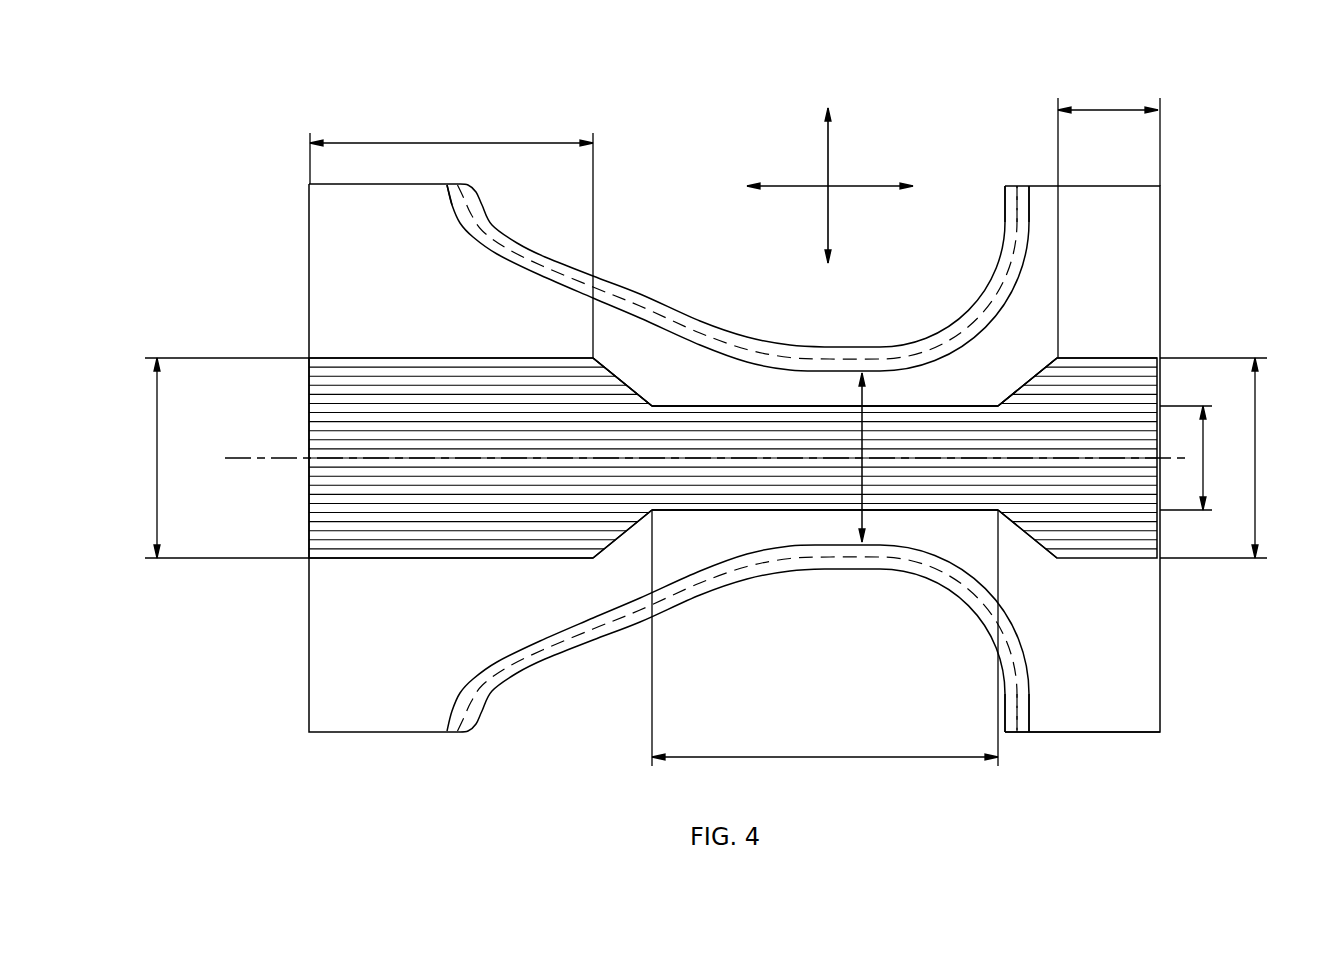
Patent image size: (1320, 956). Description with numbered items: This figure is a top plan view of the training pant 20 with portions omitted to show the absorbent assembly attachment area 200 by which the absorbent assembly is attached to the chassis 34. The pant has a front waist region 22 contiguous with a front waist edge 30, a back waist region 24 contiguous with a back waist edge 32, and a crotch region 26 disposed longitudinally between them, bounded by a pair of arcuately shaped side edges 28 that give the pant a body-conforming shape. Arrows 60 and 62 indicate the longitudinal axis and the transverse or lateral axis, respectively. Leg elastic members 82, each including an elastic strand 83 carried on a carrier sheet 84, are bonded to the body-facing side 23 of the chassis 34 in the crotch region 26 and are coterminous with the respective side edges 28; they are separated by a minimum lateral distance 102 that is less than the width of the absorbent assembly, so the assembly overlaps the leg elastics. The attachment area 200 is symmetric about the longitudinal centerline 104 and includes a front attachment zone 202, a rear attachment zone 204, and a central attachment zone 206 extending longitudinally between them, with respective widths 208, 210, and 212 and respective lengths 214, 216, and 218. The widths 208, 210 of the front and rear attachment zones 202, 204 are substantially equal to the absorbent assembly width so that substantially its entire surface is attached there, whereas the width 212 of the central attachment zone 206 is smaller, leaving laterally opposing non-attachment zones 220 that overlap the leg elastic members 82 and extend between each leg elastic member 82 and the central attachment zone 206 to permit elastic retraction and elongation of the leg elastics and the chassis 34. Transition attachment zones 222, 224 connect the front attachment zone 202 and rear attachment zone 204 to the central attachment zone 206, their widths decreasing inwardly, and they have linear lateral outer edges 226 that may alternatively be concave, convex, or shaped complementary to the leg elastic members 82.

The training pant 20 is at (320, 98).
The front waist region 22 is at (1101, 742).
The body-facing side 23 is at (453, 248).
The back waist region 24 is at (357, 229).
The crotch region 26 is at (853, 582).
The side edges 28 is at (672, 304).
The front waist edge 30 is at (1162, 624).
The back waist edge 32 is at (308, 378).
The chassis 34 is at (510, 296).
The arrow 60 is at (852, 184).
The arrow 62 is at (826, 158).
The leg elastic members 82 is at (1028, 230).
The elastic strand 83 is at (1012, 212).
The carrier sheet 84 is at (1006, 238).
The minimum lateral distance 102 is at (864, 402).
The longitudinal centerline 104 is at (280, 458).
The absorbent assembly attachment area 200 is at (350, 568).
The front attachment zone 202 is at (1133, 378).
The rear attachment zone 204 is at (418, 532).
The central attachment zone 206 is at (748, 485).
The width of front attachment zone 208 is at (1258, 420).
The width of rear attachment zone 210 is at (157, 450).
The width of central attachment zone 212 is at (1222, 436).
The length of front attachment zone 214 is at (1095, 108).
The length of rear attachment zone 216 is at (425, 140).
The length of central attachment zone 218 is at (807, 762).
The non-attachment zones 220 is at (768, 392).
The transition attachment zone 222 is at (1052, 362).
The transition attachment zone 224 is at (602, 365).
The lateral outer edges 226 is at (636, 394).